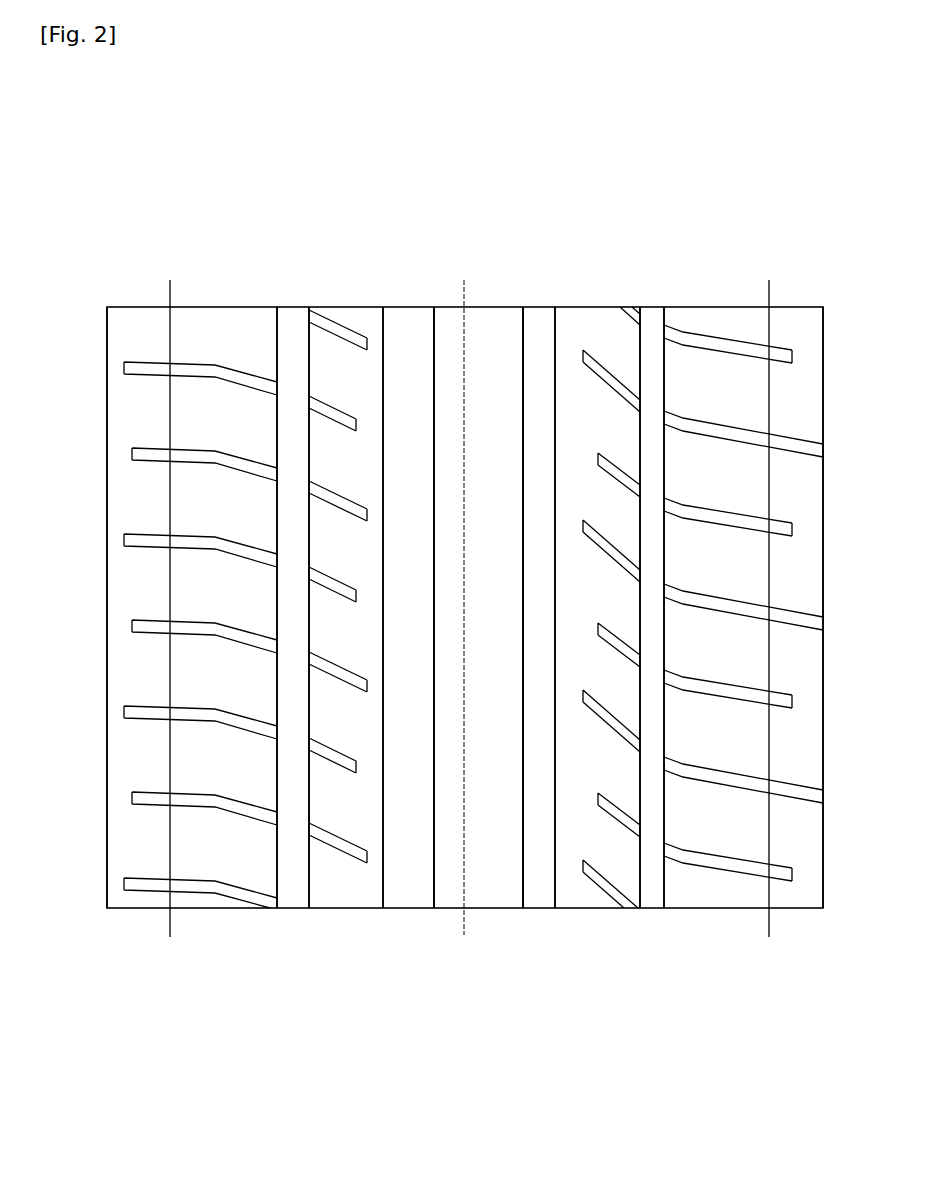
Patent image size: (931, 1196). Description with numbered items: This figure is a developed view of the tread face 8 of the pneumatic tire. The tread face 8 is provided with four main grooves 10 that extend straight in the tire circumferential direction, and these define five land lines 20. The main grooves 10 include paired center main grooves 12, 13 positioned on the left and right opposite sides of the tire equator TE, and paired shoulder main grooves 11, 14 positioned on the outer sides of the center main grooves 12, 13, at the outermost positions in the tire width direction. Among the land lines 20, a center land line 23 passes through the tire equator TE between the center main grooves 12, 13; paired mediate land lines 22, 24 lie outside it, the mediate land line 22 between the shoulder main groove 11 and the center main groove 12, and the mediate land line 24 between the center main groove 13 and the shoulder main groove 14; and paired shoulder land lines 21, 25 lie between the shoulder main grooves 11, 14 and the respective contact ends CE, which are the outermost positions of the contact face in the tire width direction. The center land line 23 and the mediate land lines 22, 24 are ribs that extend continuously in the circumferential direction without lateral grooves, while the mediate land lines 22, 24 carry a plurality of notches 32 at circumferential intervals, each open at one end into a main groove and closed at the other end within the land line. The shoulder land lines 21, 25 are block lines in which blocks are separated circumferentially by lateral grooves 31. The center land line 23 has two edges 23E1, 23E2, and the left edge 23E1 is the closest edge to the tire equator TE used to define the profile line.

The tread face 8 is at (108, 913).
The main grooves 10 is at (490, 555).
The shoulder main groove 11 is at (292, 322).
The center main groove 12 is at (403, 322).
The center main groove 13 is at (542, 322).
The shoulder main groove 14 is at (655, 317).
The land lines 20 is at (465, 645).
The shoulder land line 21 is at (193, 902).
The mediate land line 22 is at (335, 902).
The center land line 23 is at (488, 903).
The mediate land line 24 is at (582, 903).
The shoulder land line 25 is at (732, 900).
The edge of the center land line 23E1 is at (430, 857).
The edge of the center land line 23E2 is at (523, 857).
The lateral grooves 31 is at (225, 625).
The notches 32 is at (357, 502).
The contact end CE is at (468, 587).
The tire equator TE is at (463, 591).